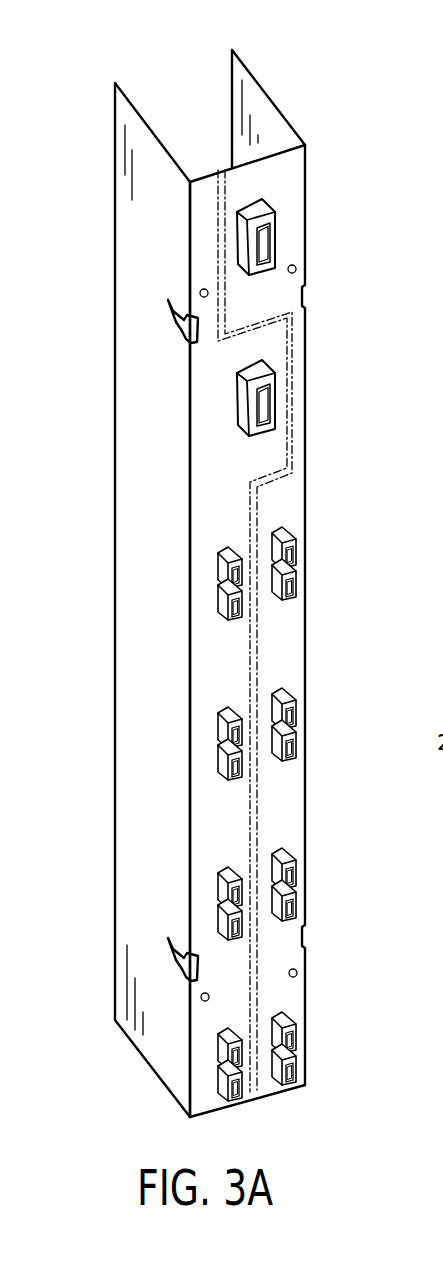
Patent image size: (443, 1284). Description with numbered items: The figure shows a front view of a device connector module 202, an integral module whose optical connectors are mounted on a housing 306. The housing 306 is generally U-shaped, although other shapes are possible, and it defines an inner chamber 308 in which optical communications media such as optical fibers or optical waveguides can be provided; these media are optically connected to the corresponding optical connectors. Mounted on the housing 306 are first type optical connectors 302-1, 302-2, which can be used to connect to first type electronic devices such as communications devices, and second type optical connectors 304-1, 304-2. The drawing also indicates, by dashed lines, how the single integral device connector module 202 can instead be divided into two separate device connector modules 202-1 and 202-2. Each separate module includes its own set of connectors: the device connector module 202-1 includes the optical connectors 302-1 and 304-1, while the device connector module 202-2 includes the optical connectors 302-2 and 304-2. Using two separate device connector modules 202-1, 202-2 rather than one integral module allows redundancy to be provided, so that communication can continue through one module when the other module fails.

The device connector module 202 is at (214, 567).
The separate device connector module 202-1 is at (213, 812).
The separate device connector module 202-2 is at (290, 803).
The first type optical connector 302-1 is at (278, 404).
The first type optical connector 302-2 is at (278, 242).
The second type optical connector 304-1 is at (218, 553).
The second type optical connector 304-2 is at (290, 532).
The housing 306 is at (138, 373).
The inner chamber 308 is at (208, 130).